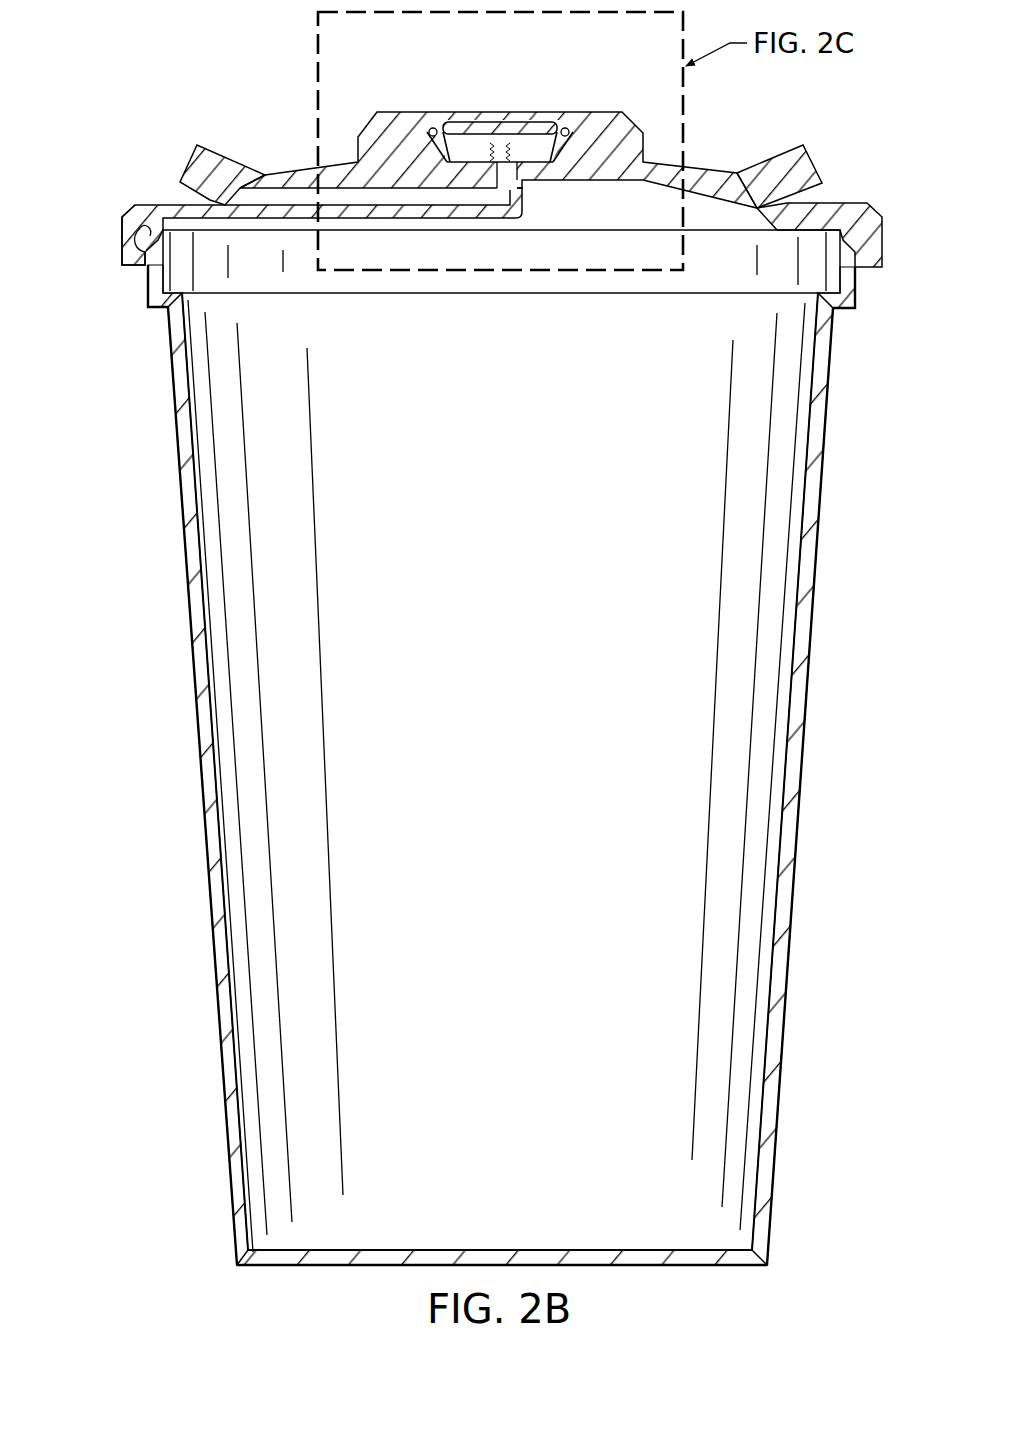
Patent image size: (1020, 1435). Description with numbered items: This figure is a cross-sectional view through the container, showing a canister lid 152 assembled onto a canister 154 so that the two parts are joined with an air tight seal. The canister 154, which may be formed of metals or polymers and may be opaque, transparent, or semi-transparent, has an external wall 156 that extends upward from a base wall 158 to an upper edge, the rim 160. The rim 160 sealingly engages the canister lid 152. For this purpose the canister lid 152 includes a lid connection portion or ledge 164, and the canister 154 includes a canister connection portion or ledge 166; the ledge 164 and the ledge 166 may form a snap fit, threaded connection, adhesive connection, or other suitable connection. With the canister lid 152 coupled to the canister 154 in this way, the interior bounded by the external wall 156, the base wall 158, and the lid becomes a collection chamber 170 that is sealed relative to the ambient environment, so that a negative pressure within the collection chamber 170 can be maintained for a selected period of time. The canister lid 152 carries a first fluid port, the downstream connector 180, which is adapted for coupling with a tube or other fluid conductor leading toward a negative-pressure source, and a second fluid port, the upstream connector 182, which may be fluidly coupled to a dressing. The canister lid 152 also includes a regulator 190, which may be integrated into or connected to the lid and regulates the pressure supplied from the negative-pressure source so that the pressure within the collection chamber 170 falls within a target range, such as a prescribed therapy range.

The canister lid 152 is at (461, 148).
The canister 154 is at (446, 778).
The external wall 156 is at (222, 1060).
The base wall 158 is at (352, 1266).
The rim 160 is at (147, 278).
The ledge 164 is at (121, 222).
The ledge 166 is at (150, 222).
The collection chamber 170 is at (523, 815).
The downstream connector 180 is at (205, 143).
The upstream connector 182 is at (792, 142).
The regulator 190 is at (478, 90).